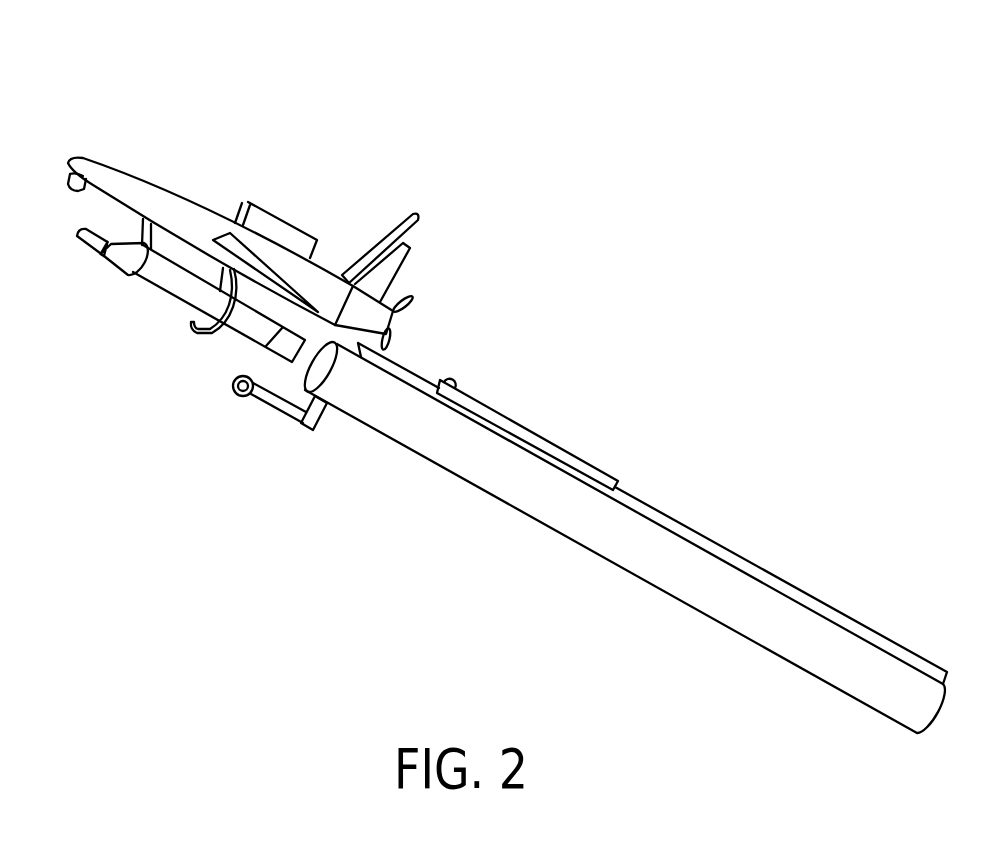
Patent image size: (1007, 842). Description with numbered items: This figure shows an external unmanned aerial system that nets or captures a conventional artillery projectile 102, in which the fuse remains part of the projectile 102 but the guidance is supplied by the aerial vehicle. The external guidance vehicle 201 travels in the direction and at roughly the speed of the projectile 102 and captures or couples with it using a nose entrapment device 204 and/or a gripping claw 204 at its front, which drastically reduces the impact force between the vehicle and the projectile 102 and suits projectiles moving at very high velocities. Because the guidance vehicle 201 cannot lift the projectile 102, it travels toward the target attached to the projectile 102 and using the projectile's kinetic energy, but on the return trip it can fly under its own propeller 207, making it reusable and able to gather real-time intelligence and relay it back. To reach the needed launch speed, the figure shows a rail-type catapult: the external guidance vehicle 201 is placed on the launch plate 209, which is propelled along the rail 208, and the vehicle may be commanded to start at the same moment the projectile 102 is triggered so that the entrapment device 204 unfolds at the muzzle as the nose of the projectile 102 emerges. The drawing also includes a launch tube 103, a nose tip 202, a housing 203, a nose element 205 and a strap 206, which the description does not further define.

The projectile 102 is at (170, 285).
The launch tube 103 is at (783, 580).
The external guidance vehicle 201 is at (157, 197).
The nose cone 202 is at (90, 240).
The payload housing 203 is at (261, 222).
The nose entrapment device 204 is at (142, 282).
The nose sensor 205 is at (97, 160).
The retaining strap 206 is at (233, 318).
The propeller 207 is at (408, 325).
The rail 208 is at (657, 524).
The launch plate 209 is at (523, 427).